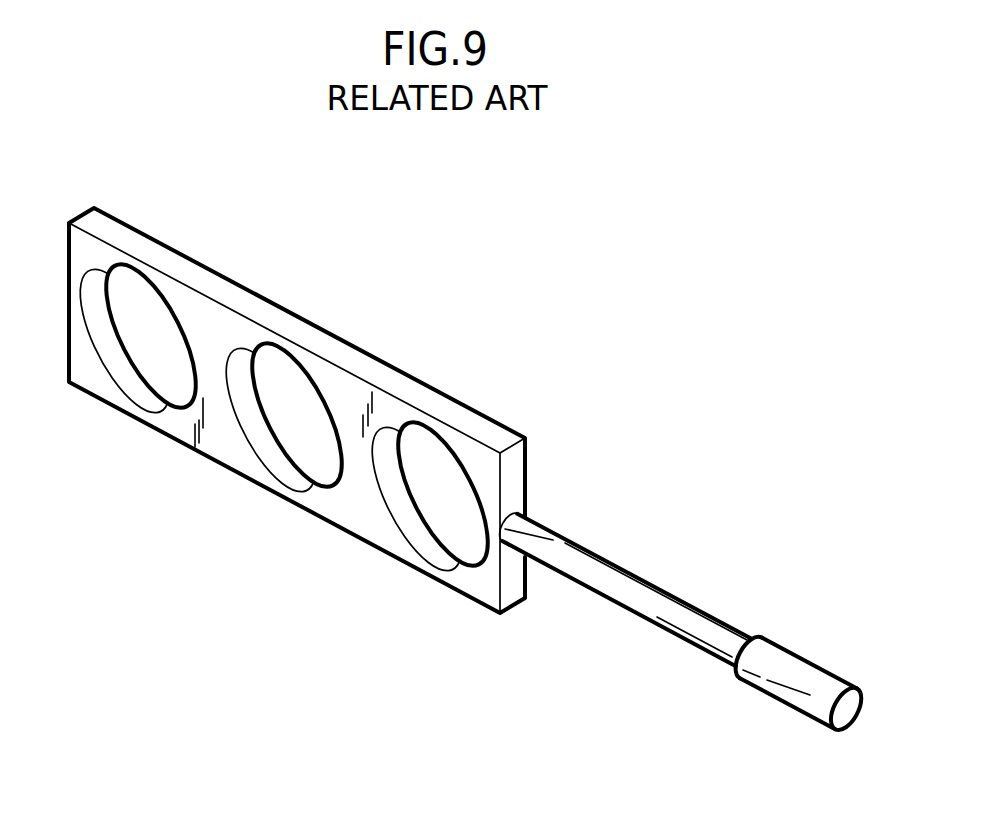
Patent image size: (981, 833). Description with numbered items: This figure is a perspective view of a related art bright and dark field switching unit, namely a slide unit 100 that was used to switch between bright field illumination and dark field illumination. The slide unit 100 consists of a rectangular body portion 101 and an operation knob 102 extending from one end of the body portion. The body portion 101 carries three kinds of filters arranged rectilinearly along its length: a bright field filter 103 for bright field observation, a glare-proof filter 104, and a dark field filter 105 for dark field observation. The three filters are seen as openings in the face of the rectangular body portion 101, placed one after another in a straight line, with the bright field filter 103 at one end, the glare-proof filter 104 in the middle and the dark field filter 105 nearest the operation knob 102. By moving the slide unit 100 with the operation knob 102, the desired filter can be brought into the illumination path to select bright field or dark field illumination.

The slide unit 100 is at (502, 292).
The body portion 101 is at (297, 327).
The operation knob 102 is at (797, 665).
The bright field filter 103 is at (122, 381).
The glare-proof filter 104 is at (270, 460).
The dark field filter 105 is at (417, 543).